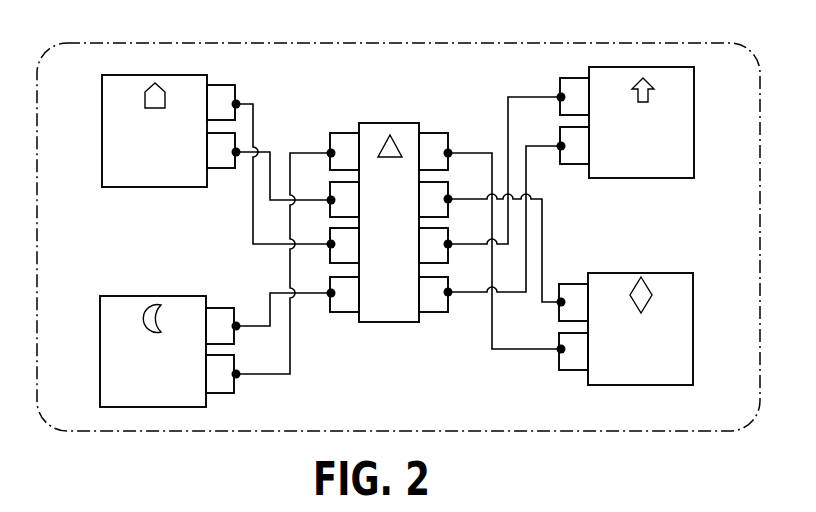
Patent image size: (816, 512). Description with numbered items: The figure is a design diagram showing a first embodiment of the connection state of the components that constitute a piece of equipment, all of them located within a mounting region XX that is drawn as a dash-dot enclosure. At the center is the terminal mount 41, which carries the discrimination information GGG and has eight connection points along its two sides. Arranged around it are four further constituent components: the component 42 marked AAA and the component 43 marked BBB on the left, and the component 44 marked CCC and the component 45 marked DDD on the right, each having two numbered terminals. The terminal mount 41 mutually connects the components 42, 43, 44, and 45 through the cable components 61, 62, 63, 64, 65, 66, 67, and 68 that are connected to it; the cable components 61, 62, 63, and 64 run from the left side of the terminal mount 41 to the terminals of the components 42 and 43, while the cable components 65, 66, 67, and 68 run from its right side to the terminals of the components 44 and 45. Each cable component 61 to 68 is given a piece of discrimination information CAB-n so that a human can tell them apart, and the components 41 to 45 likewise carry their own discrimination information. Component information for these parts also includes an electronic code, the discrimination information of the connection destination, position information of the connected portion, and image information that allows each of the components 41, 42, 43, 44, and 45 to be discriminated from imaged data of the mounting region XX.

The mounting region XX is at (400, 43).
The terminal mount 41 is at (393, 123).
The component 42 is at (102, 130).
The component 43 is at (100, 352).
The component 44 is at (694, 122).
The component 45 is at (693, 327).
The cable component 61 is at (330, 146).
The cable component 62 is at (330, 195).
The cable component 63 is at (330, 240).
The cable component 64 is at (330, 289).
The cable component 65 is at (449, 289).
The cable component 66 is at (449, 240).
The cable component 67 is at (449, 195).
The cable component 68 is at (449, 146).